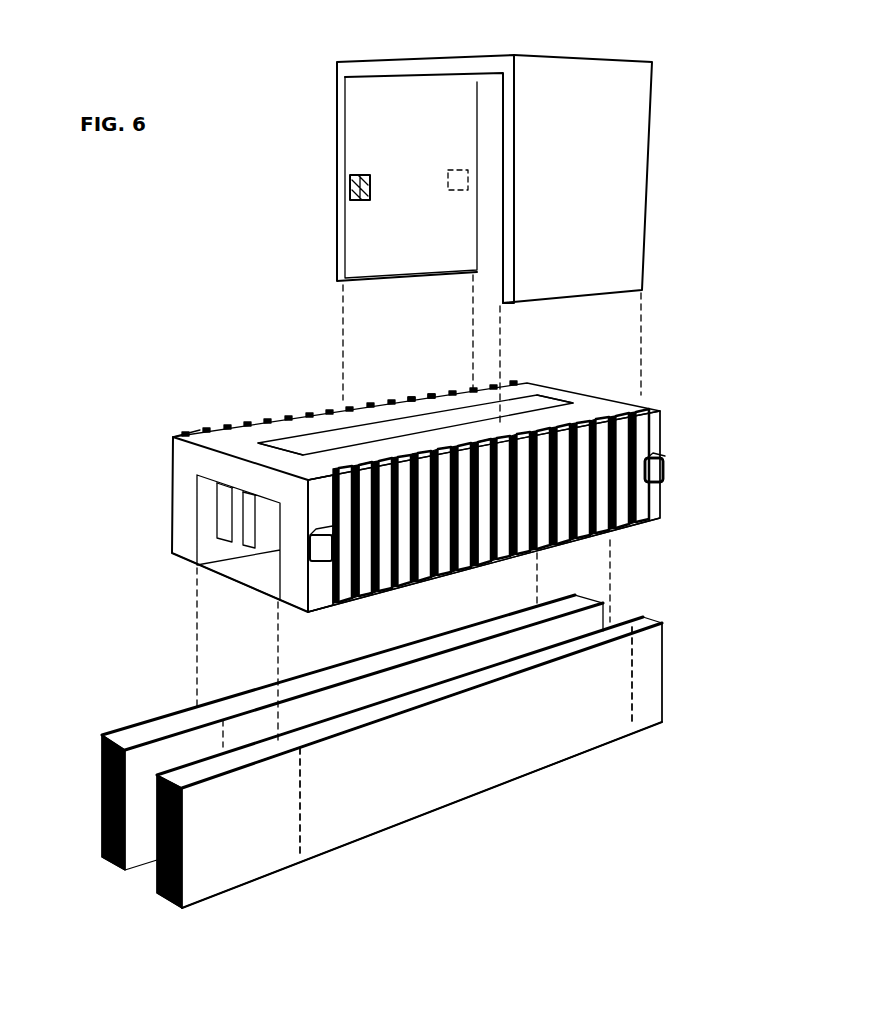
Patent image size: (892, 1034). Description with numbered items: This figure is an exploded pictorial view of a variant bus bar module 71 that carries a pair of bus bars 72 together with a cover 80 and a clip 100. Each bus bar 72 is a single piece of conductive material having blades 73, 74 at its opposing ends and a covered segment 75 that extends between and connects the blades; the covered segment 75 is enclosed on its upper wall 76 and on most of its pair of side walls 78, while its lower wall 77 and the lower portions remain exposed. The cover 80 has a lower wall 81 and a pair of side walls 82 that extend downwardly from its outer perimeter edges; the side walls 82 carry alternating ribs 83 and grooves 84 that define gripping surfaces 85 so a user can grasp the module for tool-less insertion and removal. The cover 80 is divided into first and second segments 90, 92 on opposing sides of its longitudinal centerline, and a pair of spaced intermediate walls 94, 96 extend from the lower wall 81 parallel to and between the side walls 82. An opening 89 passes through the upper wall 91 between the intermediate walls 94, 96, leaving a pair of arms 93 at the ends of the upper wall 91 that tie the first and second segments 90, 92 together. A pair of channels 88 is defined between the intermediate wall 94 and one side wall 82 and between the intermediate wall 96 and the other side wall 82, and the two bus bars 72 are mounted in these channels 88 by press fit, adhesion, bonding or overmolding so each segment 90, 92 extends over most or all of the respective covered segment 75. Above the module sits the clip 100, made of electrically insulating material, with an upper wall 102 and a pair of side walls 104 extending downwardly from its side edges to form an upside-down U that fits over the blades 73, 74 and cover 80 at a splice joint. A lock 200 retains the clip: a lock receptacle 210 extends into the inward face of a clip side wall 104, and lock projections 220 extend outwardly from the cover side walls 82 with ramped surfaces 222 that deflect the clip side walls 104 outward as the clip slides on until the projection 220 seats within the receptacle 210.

The bus bar module 71 is at (78, 518).
The bus bar 72 is at (99, 773).
The blade 73 is at (100, 822).
The blade 74 is at (610, 615).
The covered segment 75 is at (414, 700).
The upper wall 76 is at (133, 733).
The lower wall 77 is at (265, 880).
The side walls 78 is at (410, 818).
The cover 80 is at (120, 550).
The lower wall 81 is at (307, 613).
The side walls 82 is at (582, 452).
The ribs 83 is at (353, 603).
The grooves 84 is at (437, 578).
The gripping surfaces 85 is at (486, 574).
The channels 88 is at (270, 547).
The opening 89 is at (417, 393).
The first segment 90 is at (287, 464).
The upper wall 91 is at (518, 391).
The second segment 92 is at (220, 443).
The arms 93 is at (262, 440).
The intermediate wall 94 is at (245, 522).
The intermediate wall 96 is at (245, 500).
The clip 100 is at (692, 110).
The upper wall 102 is at (420, 68).
The side walls 104 is at (432, 254).
The lock 200 is at (347, 186).
The lock receptacle 210 is at (375, 188).
The lock projection 220 is at (668, 470).
The ramped surface 222 is at (308, 562).